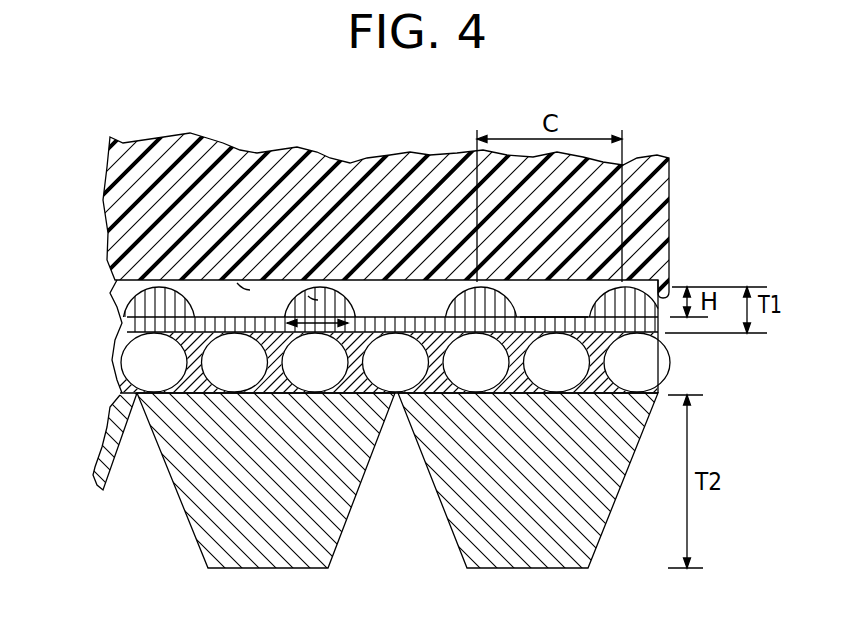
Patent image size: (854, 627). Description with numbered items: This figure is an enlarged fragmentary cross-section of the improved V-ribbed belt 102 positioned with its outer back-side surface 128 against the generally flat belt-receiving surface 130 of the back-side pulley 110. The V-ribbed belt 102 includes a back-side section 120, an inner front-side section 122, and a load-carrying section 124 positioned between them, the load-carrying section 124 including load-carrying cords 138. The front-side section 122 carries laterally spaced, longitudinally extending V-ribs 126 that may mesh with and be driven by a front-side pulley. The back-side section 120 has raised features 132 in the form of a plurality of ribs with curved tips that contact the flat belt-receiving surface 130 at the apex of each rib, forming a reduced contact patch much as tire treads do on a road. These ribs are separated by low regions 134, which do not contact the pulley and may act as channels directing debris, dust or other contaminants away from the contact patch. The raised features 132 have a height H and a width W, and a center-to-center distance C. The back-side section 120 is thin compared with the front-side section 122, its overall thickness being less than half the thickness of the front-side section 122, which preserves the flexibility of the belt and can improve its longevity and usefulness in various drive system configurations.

The V-ribbed belt 102 is at (422, 438).
The back-side pulley 110 is at (247, 210).
The back-side section 120 is at (346, 315).
The front-side section 122 is at (422, 493).
The load-carrying section 124 is at (383, 363).
The V-ribs 126 is at (447, 490).
The outer back-side surface 128 is at (530, 317).
The belt-receiving surface 130 is at (243, 290).
The raised features 132 is at (312, 296).
The low regions 134 is at (366, 309).
The load-carrying cords 138 is at (606, 378).